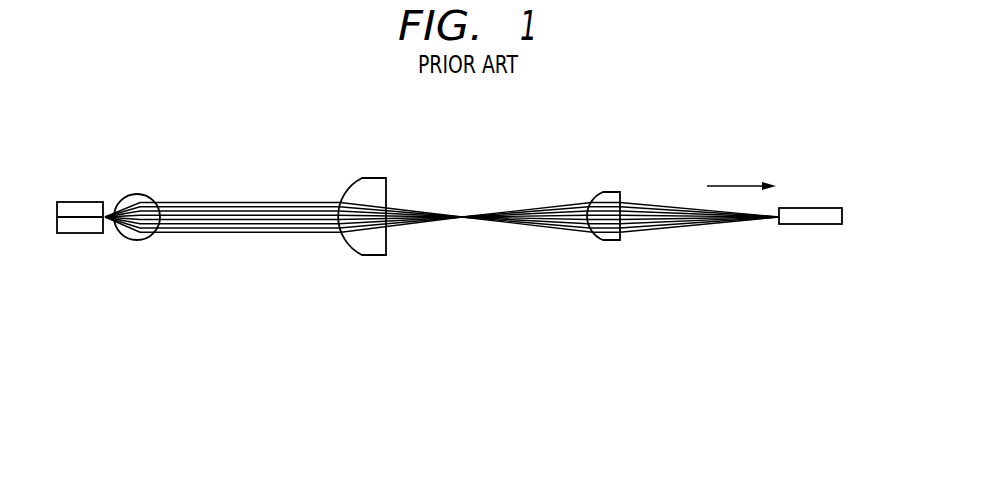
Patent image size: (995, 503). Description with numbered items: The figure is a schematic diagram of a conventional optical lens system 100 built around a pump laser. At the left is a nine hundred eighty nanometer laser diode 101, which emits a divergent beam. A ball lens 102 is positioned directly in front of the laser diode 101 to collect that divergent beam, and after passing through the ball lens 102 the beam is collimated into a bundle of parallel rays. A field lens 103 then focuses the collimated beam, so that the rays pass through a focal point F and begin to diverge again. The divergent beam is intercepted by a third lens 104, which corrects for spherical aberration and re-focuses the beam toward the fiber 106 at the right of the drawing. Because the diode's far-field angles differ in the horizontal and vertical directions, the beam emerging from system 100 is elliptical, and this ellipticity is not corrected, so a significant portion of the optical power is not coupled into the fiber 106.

The conventional optical lens system 100 is at (486, 128).
The laser diode 101 is at (77, 233).
The ball lens 102 is at (132, 240).
The field lens 103 is at (370, 256).
The third lens 104 is at (608, 240).
The fiber 106 is at (808, 224).